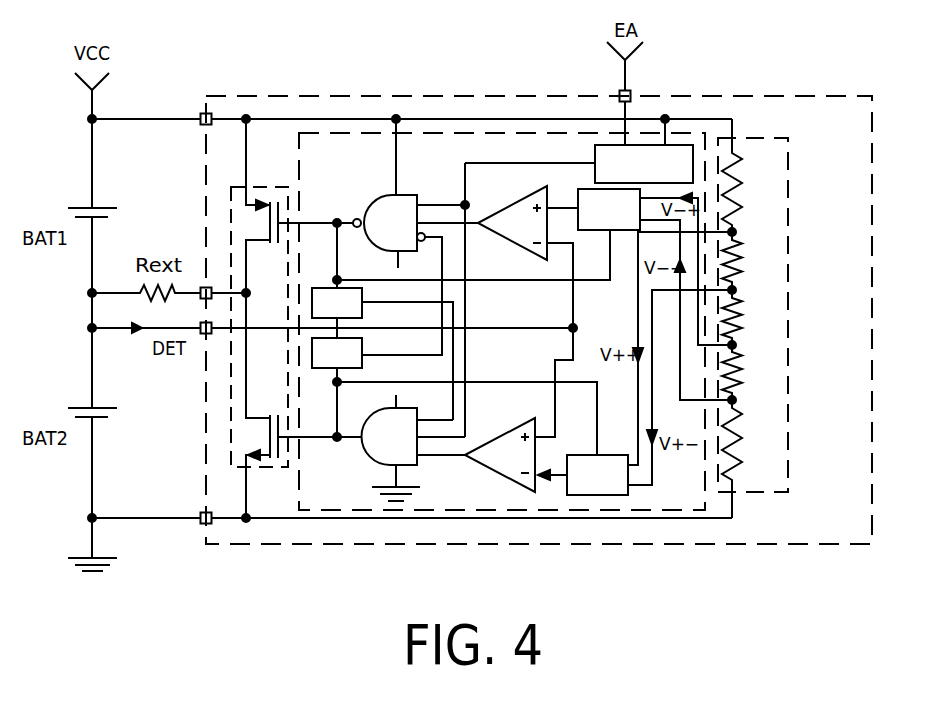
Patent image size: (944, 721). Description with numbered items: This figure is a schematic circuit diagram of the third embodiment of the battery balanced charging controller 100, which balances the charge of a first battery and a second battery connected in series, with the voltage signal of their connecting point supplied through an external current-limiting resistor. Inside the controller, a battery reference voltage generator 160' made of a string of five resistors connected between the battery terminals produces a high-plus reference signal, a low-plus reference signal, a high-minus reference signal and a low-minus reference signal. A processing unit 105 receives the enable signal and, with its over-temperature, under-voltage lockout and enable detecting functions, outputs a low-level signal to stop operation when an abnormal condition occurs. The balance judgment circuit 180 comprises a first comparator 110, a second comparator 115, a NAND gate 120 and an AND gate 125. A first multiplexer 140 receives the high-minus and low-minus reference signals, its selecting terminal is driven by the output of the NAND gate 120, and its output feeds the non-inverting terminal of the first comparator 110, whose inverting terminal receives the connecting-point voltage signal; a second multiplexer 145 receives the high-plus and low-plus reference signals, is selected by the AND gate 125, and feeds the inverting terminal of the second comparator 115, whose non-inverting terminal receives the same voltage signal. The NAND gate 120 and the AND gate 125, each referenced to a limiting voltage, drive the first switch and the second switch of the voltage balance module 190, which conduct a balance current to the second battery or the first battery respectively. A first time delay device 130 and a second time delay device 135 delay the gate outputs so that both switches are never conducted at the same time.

The battery balanced charging controller 100 is at (793, 100).
The processing unit 105 is at (644, 164).
The first comparator 110 is at (525, 200).
The second comparator 115 is at (493, 443).
The NAND gate 120 is at (383, 208).
The AND gate 125 is at (408, 457).
The first time delay device 130 is at (382, 354).
The second time delay device 135 is at (337, 353).
The first multiplexer 140 is at (594, 232).
The second multiplexer 145 is at (574, 455).
The battery reference voltage generator 160' is at (781, 318).
The balance judgment circuit 180 is at (310, 167).
The voltage balance module 190 is at (252, 466).